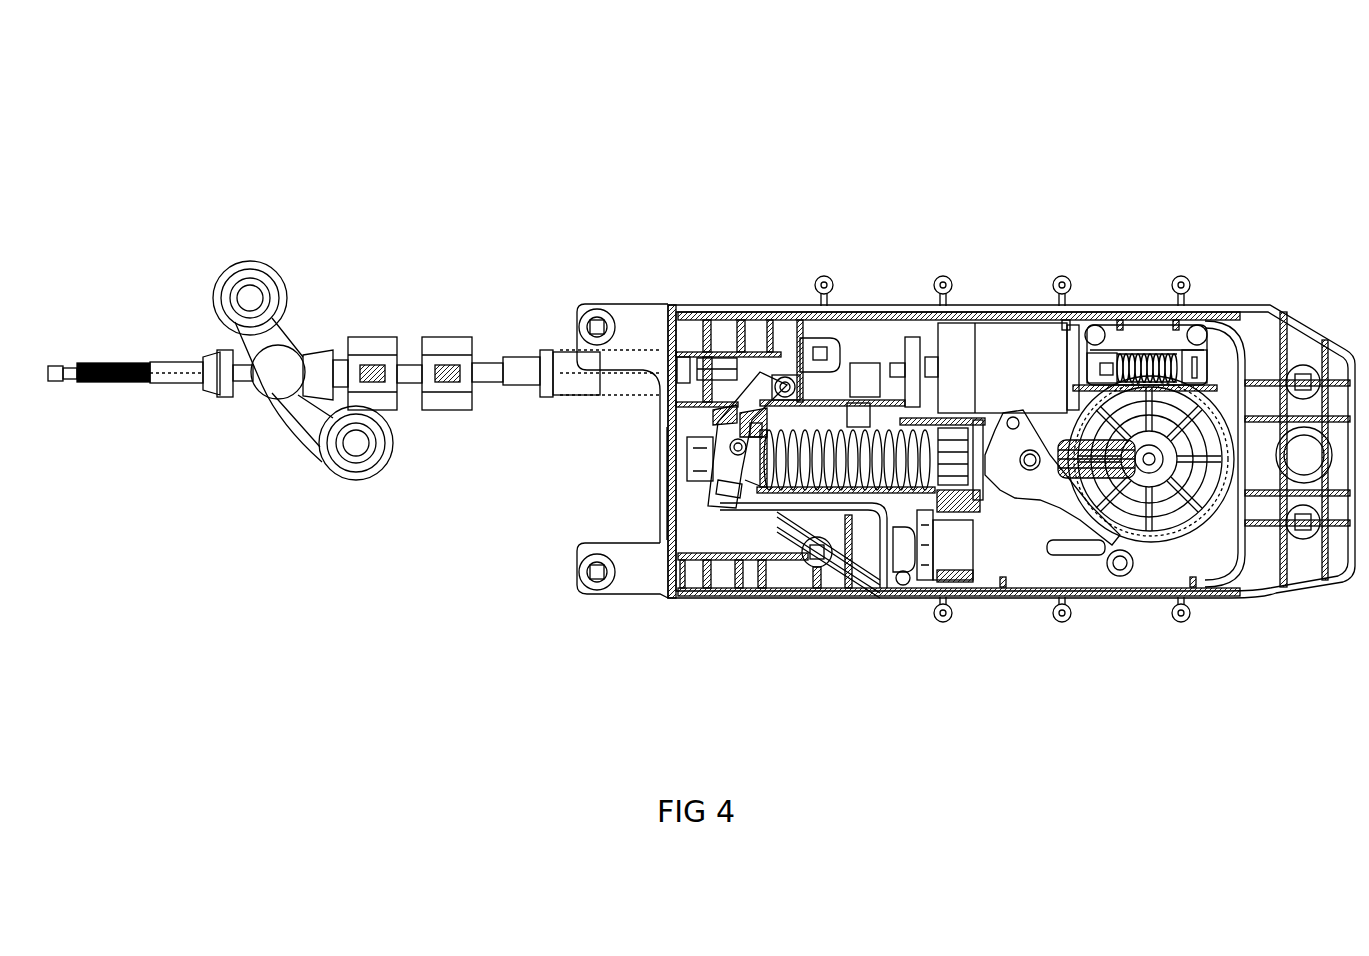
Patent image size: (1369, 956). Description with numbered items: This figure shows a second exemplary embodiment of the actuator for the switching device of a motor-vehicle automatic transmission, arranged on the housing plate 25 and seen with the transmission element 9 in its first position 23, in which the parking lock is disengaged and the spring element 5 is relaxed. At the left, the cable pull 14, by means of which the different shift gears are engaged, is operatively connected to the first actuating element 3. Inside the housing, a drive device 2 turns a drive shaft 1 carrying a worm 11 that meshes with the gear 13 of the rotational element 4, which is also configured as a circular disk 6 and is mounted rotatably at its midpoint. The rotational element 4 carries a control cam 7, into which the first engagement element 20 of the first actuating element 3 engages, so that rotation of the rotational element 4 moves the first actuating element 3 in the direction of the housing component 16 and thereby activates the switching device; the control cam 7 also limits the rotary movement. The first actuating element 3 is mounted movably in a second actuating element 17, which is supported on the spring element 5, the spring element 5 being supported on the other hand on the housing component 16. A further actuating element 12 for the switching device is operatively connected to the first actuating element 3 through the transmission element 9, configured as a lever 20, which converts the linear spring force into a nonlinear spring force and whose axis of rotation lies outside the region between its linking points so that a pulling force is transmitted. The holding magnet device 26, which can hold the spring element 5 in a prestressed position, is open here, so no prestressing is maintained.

The drive shaft 1 is at (1084, 352).
The drive device 2 is at (1012, 350).
The first actuating element 3 is at (733, 466).
The rotational element 4 is at (1204, 360).
The spring element 5 is at (845, 430).
The circular disk 6 is at (1178, 430).
The control cam 7 is at (1178, 490).
The transmission element 9 is at (744, 459).
The worm 11 is at (1144, 367).
The actuating element 12 is at (713, 378).
The gear 13 is at (1204, 360).
The cable pull 14 is at (482, 365).
The housing component 16 is at (761, 413).
The second actuating element 17 is at (957, 432).
The lever 20 is at (745, 413).
The first position 23 is at (648, 462).
The housing plate 25 is at (1317, 550).
The holding magnet device 26 is at (963, 557).